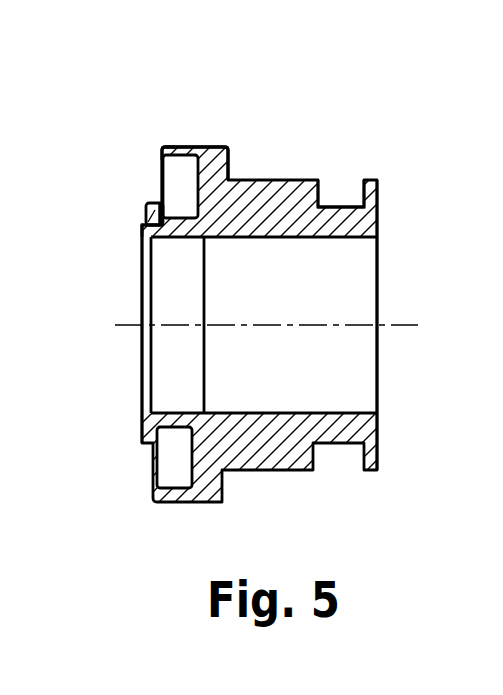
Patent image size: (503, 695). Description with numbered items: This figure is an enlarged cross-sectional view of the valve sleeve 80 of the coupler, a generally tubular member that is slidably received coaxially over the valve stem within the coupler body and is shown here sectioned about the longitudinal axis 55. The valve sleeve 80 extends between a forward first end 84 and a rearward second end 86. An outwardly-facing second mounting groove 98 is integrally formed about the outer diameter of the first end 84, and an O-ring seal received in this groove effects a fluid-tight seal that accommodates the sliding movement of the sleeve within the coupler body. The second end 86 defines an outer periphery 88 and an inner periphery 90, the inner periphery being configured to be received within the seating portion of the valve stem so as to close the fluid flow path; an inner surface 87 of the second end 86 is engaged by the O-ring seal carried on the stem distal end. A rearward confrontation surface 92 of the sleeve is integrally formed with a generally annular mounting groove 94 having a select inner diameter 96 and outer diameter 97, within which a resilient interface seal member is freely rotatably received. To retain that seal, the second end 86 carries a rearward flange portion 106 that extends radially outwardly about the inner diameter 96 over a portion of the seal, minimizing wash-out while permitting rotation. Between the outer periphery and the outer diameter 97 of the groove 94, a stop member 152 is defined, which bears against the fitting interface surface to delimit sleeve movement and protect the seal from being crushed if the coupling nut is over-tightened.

The valve sleeve 80 is at (340, 99).
The forward first end 84 is at (378, 181).
The rearward second end 86 is at (188, 147).
The inner surface 87 is at (176, 238).
The outer periphery 88 is at (140, 244).
The inner periphery 90 is at (162, 148).
The rearward confrontation surface 92 is at (143, 224).
The annular mounting groove 94 is at (180, 186).
The inner diameter 96 is at (150, 205).
The outer diameter 97 is at (150, 204).
The second mounting groove 98 is at (335, 206).
The rearward flange portion 106 is at (142, 440).
The stop member 152 is at (161, 150).
The longitudinal axis 55 is at (405, 326).